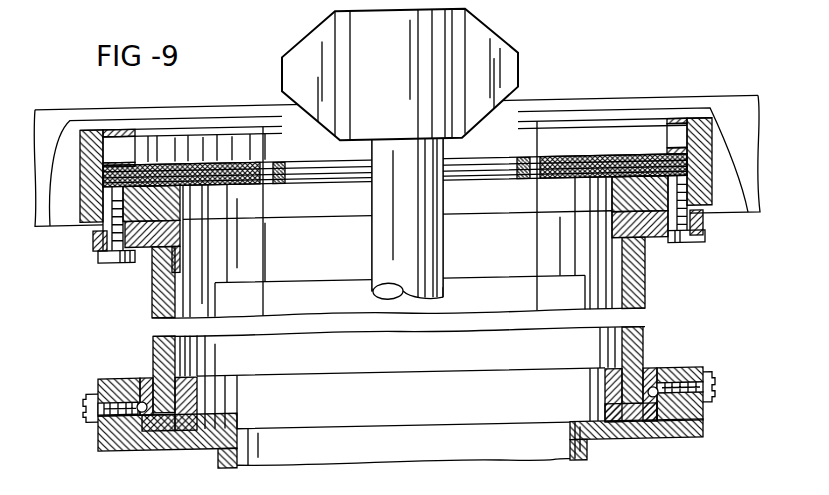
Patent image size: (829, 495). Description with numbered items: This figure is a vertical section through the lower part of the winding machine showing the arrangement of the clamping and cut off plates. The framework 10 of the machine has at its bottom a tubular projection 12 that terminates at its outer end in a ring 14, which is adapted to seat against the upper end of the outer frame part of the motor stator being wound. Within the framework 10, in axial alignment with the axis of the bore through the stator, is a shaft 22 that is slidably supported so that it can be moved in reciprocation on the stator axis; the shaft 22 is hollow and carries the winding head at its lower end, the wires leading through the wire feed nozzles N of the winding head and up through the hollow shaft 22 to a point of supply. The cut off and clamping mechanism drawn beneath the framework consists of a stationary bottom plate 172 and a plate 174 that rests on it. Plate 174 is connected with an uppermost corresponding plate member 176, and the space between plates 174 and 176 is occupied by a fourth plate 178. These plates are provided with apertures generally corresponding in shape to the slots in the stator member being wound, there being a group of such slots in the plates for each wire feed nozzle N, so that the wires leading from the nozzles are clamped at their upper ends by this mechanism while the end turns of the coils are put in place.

The framework 10 is at (215, 108).
The tubular projection 12 is at (648, 311).
The ring 14 is at (688, 446).
The shaft 22 is at (443, 241).
The wire feed nozzle N is at (497, 48).
The stationary bottom plate 172 is at (592, 179).
The plate 174 is at (583, 159).
The uppermost plate member 176 is at (580, 158).
The fourth plate 178 is at (515, 176).